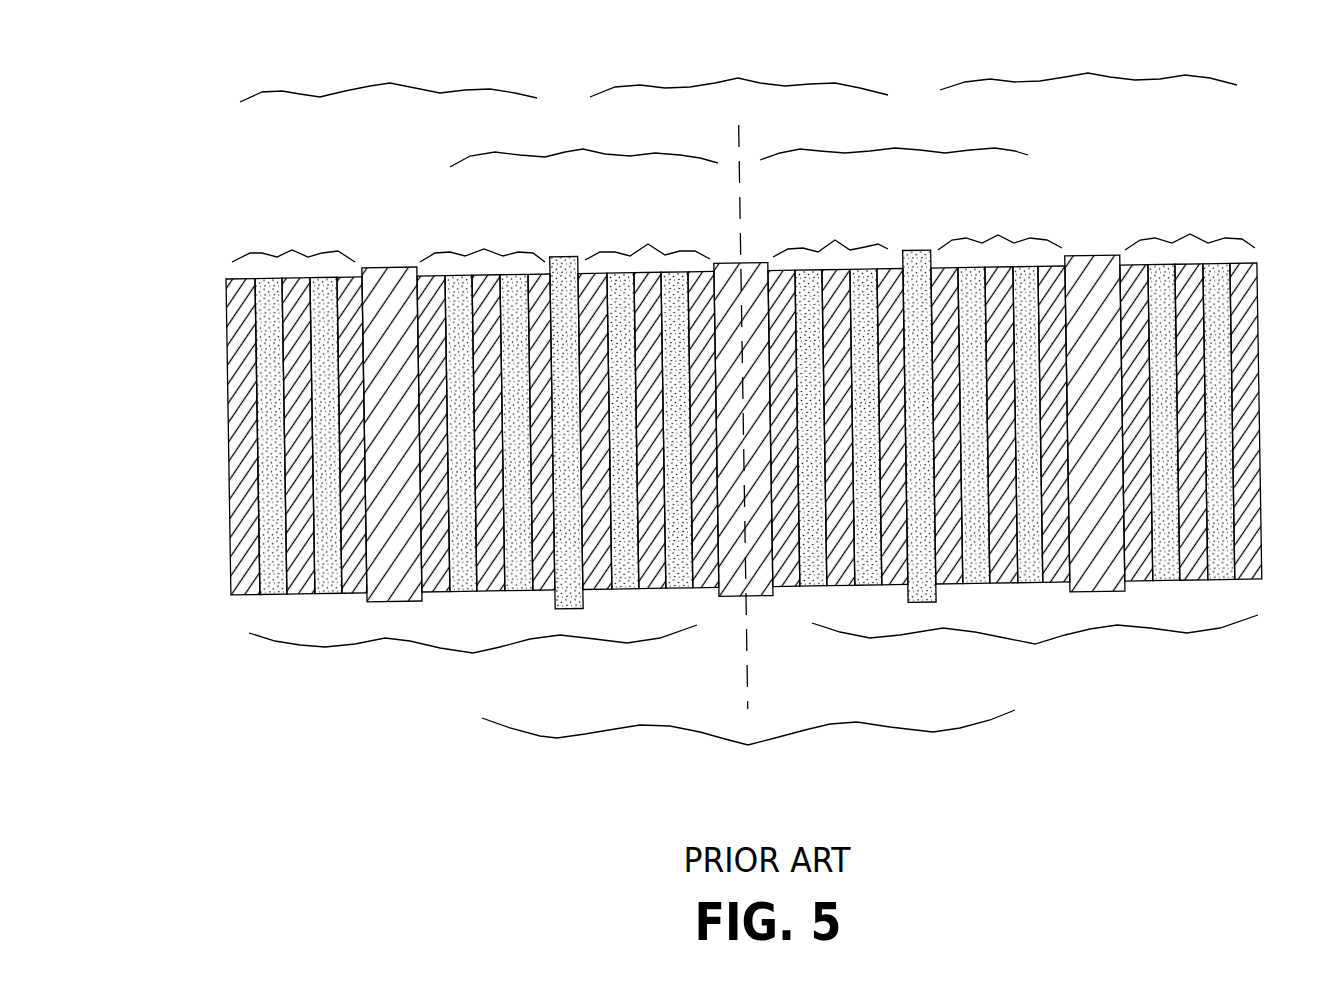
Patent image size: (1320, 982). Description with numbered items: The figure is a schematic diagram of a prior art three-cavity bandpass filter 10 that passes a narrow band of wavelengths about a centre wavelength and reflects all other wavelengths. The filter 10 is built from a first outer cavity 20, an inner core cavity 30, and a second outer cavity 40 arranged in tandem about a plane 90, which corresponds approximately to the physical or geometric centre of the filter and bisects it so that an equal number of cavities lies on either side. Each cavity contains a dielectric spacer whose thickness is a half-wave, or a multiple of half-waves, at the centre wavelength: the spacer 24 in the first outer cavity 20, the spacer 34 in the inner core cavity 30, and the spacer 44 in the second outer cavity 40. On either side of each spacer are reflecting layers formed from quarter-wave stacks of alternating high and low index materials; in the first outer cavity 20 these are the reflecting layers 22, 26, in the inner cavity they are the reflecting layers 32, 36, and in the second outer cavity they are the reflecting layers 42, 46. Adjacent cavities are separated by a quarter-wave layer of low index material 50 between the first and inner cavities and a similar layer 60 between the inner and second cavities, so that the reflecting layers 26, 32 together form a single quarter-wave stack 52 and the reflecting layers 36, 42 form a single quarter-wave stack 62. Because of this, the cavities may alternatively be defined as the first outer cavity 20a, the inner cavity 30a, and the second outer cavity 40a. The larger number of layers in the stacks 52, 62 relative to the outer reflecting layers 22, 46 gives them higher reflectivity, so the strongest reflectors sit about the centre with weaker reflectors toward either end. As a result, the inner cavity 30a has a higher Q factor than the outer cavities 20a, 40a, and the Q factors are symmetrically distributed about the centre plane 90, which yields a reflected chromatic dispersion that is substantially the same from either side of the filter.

The filter 10 is at (698, 417).
The first outer cavity 20 is at (381, 323).
The first outer cavity region 20a is at (473, 484).
The reflecting layer 22 is at (294, 401).
The dielectric spacer 24 is at (392, 434).
The reflecting layer 26 is at (483, 398).
The inner core cavity 30 is at (739, 317).
The inner cavity region 30a is at (748, 527).
The reflecting layer 32 is at (646, 397).
The dielectric spacer 34 is at (743, 430).
The reflecting layer 36 is at (835, 393).
The second outer cavity 40 is at (1088, 311).
The second outer cavity region 40a is at (1035, 475).
The reflecting layer 42 is at (998, 390).
The dielectric spacer 44 is at (1095, 423).
The reflecting layer 46 is at (1188, 387).
The quarter-wave layer of low index material 50 is at (566, 433).
The quarter-wave stack 52 is at (584, 353).
The quarter-wave layer of low index material 60 is at (919, 426).
The quarter-wave stack 62 is at (894, 347).
The plane 90 is at (743, 417).